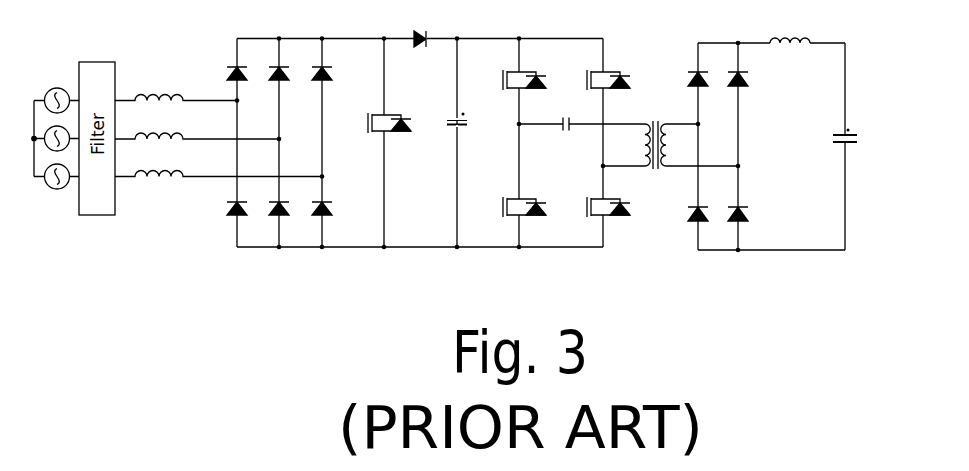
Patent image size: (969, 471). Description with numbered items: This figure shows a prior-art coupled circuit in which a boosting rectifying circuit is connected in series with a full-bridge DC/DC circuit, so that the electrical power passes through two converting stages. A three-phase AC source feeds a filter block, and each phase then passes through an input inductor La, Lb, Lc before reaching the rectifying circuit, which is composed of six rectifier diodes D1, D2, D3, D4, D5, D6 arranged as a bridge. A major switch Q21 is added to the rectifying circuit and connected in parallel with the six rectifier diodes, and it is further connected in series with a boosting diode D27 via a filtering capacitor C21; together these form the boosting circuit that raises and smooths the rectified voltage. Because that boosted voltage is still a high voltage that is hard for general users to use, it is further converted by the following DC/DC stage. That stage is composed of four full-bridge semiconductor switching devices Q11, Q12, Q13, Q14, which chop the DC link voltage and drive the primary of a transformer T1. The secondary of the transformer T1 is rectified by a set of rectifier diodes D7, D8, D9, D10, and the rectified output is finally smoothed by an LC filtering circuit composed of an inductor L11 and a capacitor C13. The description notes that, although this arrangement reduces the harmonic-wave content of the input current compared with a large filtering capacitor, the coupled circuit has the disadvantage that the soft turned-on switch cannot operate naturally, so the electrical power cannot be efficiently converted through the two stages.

The input inductor phase a La is at (176, 86).
The input inductor phase b Lb is at (197, 126).
The input inductor phase c Lc is at (218, 163).
The rectifier diode D1 is at (232, 64).
The rectifier diode D2 is at (274, 64).
The rectifier diode D3 is at (316, 64).
The rectifier diode D4 is at (232, 199).
The rectifier diode D5 is at (274, 199).
The rectifier diode D6 is at (316, 199).
The major switch Q21 is at (368, 133).
The boosting diode D27 is at (431, 27).
The filtering capacitor C21 is at (445, 112).
The full-bridge semiconductor switching device Q11 is at (503, 90).
The full-bridge semiconductor switching device Q12 is at (587, 90).
The full-bridge semiconductor switching device Q13 is at (587, 217).
The full-bridge semiconductor switching device Q14 is at (503, 217).
The transformer T1 is at (691, 136).
The rectifier diode D7 is at (692, 70).
The rectifier diode D8 is at (733, 70).
The rectifier diode D9 is at (733, 204).
The rectifier diode D10 is at (687, 204).
The inductor L11 is at (790, 32).
The capacitor C13 is at (861, 127).